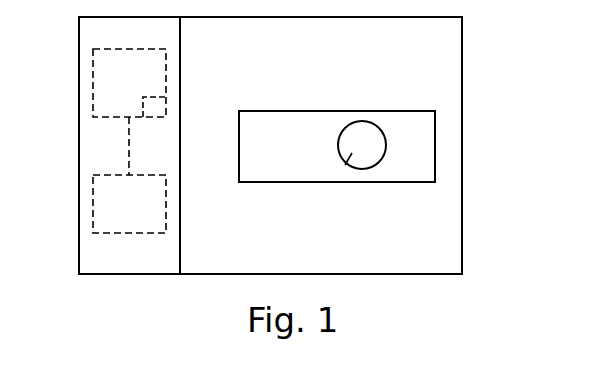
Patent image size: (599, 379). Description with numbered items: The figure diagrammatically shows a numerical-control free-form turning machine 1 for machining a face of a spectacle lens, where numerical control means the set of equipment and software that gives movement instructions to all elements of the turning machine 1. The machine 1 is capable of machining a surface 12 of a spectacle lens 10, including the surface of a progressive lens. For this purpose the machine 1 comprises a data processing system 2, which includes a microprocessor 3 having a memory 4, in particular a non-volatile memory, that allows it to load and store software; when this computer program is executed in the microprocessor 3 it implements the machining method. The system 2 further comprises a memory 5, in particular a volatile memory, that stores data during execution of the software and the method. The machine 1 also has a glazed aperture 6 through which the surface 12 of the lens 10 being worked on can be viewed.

The turning machine 1 is at (462, 70).
The data processing system 2 is at (100, 258).
The microprocessor 3 is at (95, 82).
The memory 4 is at (153, 108).
The memory 5 is at (97, 183).
The glazed aperture 6 is at (423, 152).
The spectacle lens 10 is at (368, 167).
The surface 12 is at (345, 166).